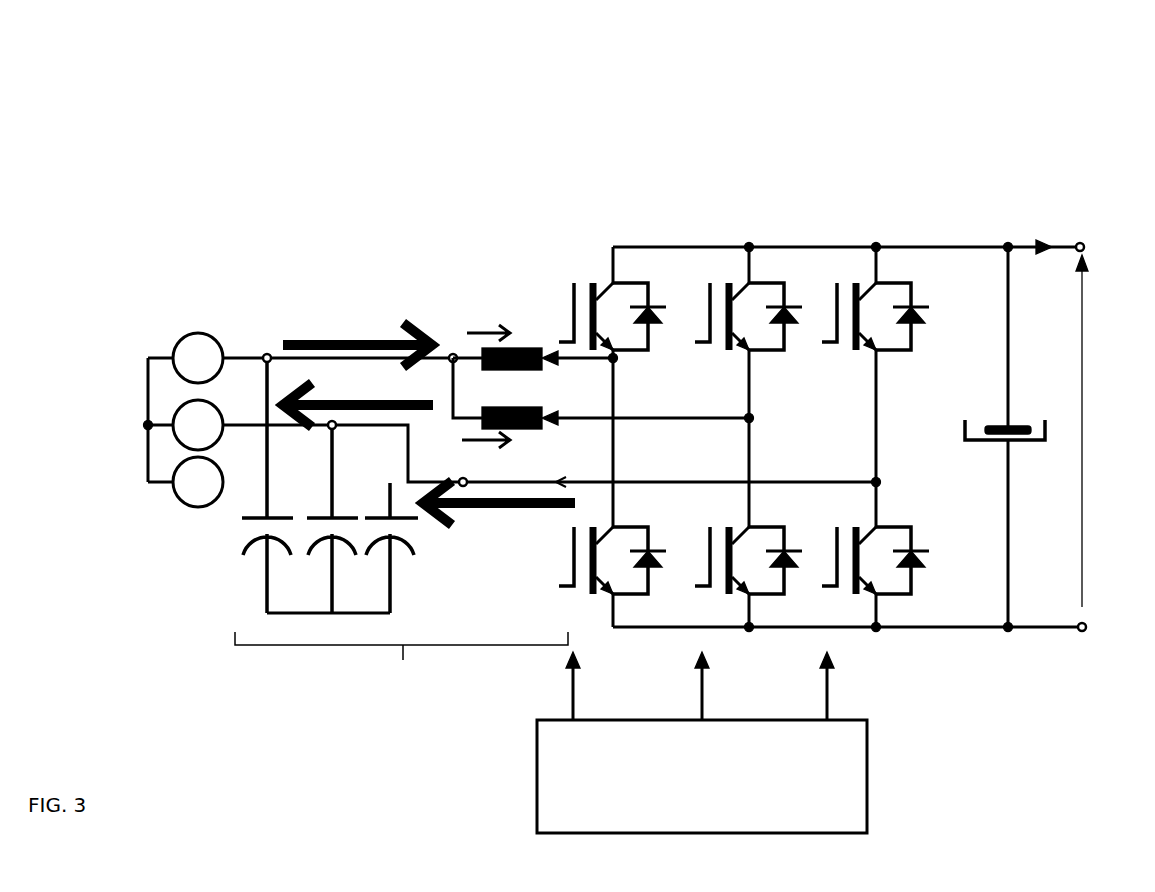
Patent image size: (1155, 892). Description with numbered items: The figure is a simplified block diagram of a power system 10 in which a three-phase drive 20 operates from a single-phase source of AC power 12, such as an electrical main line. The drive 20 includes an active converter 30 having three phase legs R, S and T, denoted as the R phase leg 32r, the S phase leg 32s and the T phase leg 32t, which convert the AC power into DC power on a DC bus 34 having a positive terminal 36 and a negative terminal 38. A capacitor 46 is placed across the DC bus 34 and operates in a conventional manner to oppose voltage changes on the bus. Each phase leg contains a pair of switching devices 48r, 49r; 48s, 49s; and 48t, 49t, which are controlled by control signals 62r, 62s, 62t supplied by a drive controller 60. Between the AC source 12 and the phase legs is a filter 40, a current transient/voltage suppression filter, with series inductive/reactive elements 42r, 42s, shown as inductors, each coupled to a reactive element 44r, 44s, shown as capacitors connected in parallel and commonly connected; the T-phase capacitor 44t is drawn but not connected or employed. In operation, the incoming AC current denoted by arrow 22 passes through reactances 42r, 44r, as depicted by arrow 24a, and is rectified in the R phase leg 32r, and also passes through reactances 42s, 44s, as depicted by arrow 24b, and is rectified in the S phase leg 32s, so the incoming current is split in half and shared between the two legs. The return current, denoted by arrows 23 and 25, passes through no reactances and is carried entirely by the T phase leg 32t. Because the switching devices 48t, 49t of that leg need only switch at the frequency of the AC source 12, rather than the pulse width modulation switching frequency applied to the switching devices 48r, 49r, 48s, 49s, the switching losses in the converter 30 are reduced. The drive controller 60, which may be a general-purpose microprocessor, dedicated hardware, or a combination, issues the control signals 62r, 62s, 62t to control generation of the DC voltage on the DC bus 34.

The power system 10 is at (950, 108).
The source of AC power 12 is at (193, 333).
The drive 20 is at (742, 140).
The arrow denoting incoming current IAC 22 is at (388, 336).
The arrow denoting return current 23 is at (388, 398).
The arrow denoting current through reactances 42r, 44r 24a is at (473, 328).
The arrow denoting current through reactances 42s, 44s 24b is at (500, 447).
The arrow denoting return current 25 is at (535, 513).
The converter 30 is at (984, 682).
The R phase leg 32r is at (617, 463).
The S phase leg 32s is at (754, 468).
The T phase leg 32t is at (880, 410).
The DC bus 34 is at (1003, 244).
The positive terminal 36 is at (1077, 240).
The negative terminal 38 is at (1086, 608).
The filter 40 is at (399, 529).
The inductive/reactive element 42r is at (515, 346).
The inductive/reactive element 42s is at (543, 408).
The reactive element 44r is at (262, 517).
The reactive element 44s is at (333, 517).
The reactive element 44t is at (415, 519).
The capacitor 46 is at (1026, 436).
The switching device 48r is at (596, 282).
The switching device 48s is at (755, 357).
The switching device 48t is at (888, 292).
The switching device 49r is at (620, 527).
The switching device 49s is at (757, 527).
The switching device 49t is at (885, 527).
The drive controller 60 is at (702, 776).
The control signal 62r is at (576, 702).
The control signal 62s is at (705, 702).
The control signal 62t is at (830, 702).